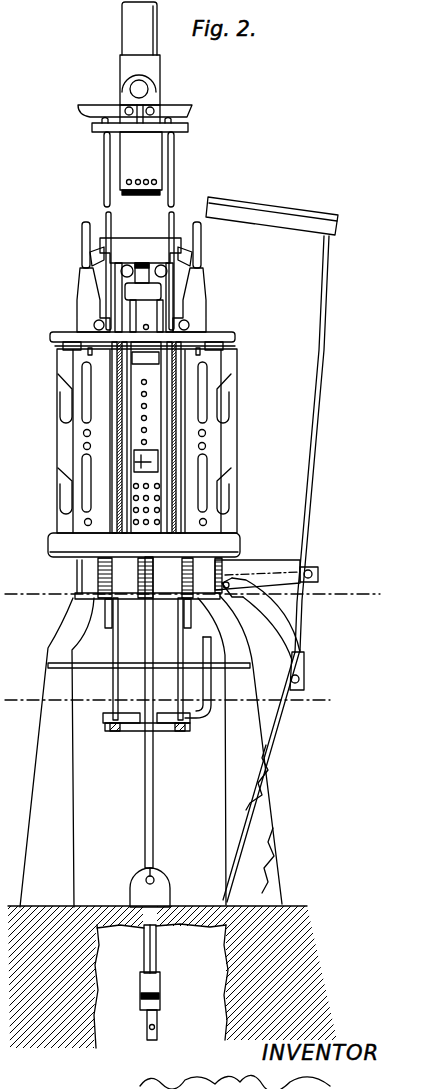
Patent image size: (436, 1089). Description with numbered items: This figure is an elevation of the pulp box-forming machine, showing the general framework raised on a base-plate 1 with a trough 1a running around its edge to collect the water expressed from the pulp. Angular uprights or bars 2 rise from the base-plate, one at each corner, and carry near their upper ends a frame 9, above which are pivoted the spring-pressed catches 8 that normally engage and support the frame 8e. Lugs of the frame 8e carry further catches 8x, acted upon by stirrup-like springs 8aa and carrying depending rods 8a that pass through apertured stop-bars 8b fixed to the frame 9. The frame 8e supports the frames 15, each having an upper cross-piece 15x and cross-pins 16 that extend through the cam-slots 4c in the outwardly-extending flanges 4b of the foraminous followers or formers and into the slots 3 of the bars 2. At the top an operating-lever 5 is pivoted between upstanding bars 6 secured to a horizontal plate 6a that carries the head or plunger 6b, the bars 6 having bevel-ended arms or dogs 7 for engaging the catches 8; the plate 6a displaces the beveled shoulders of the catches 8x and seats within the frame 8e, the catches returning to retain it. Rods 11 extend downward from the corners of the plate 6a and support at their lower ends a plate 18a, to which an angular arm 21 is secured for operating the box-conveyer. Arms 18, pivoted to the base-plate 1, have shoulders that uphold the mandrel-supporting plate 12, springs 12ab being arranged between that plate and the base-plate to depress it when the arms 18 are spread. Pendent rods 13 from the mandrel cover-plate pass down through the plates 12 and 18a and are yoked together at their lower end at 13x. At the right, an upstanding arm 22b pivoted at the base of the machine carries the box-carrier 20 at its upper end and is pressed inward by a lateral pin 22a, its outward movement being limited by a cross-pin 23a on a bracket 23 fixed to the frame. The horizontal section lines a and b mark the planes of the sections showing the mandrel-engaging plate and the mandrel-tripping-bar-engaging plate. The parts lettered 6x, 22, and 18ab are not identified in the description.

The base-plate 1 is at (150, 525).
The trough 1a is at (56, 549).
The angular uprights or bars 2 is at (85, 441).
The slots 3 is at (88, 484).
The flanges or extensions 4b is at (238, 453).
The cam-slots 4c is at (60, 391).
The operating-lever 5 is at (127, 33).
The upstanding bars 6 is at (156, 93).
The horizontal plate 6a is at (190, 128).
The head or plunger 6b is at (133, 153).
The rod end 6x is at (176, 199).
The bevel-ended arms or dogs 7 is at (80, 111).
The spring-pressed catches 8 is at (80, 231).
The depending rods 8a is at (79, 293).
The stirrup-like springs 8aa is at (92, 259).
The apertured stop-bars 8b is at (68, 348).
The frame 8e is at (144, 246).
The catches 8x is at (101, 226).
The frame 9 is at (226, 337).
The rods 11 is at (112, 507).
The mandrel-supporting plate 12 is at (97, 592).
The springs 12ab is at (98, 586).
The pendent rods 13 is at (141, 583).
The yoke 13x is at (158, 1031).
The frames 15 is at (135, 406).
The upper cross-pieces 15x is at (143, 292).
The cross-pins 16 is at (146, 463).
The spring-acted-upon bars or arms 18 is at (152, 818).
The plate 18a is at (128, 743).
The socket 18ab is at (142, 1005).
The box-carrier 20 is at (303, 218).
The angular arm 21 is at (210, 700).
The arm 22 is at (280, 621).
The lateral pin 22a is at (306, 681).
The upstanding arm 22b is at (318, 452).
The bracket 23 is at (283, 567).
The cross-pin 23a is at (319, 573).
The section line a a is at (190, 597).
The section line b b is at (165, 701).